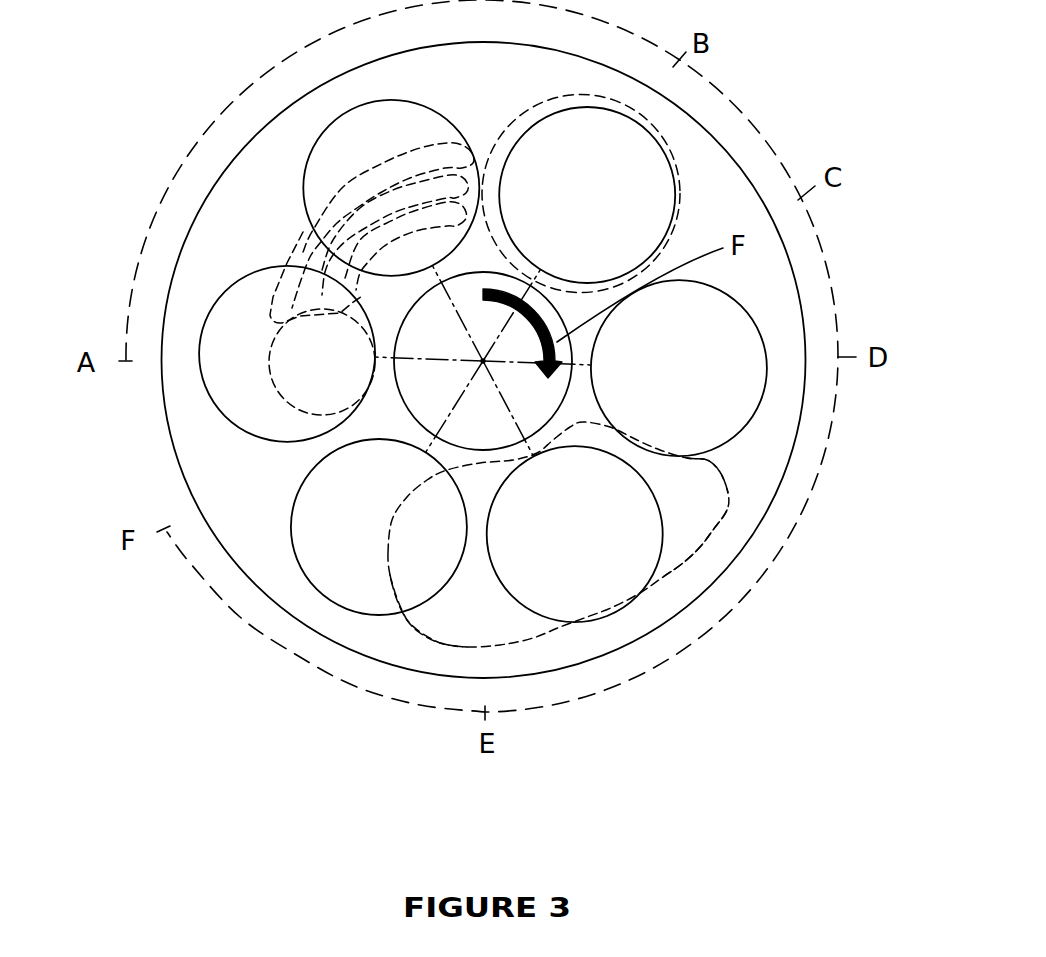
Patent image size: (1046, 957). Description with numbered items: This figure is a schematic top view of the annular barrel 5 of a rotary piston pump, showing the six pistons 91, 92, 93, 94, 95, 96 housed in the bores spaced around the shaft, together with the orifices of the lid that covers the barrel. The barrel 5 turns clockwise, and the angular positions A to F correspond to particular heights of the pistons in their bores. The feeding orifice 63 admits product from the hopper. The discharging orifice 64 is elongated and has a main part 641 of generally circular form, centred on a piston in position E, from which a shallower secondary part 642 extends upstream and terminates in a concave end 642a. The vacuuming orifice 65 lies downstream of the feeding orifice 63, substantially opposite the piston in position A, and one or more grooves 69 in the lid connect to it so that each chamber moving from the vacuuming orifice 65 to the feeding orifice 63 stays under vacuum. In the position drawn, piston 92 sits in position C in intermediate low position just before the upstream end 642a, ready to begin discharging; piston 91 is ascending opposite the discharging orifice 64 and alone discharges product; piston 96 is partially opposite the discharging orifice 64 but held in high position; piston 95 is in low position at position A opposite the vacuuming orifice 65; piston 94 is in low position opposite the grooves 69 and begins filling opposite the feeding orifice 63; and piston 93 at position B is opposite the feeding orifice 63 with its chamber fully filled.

The annular barrel 5 is at (710, 175).
The feeding orifice 63 is at (590, 107).
The discharging orifice 64 is at (572, 628).
The main part of the discharging orifice 641 is at (417, 623).
The secondary part of the discharging orifice 642 is at (700, 550).
The concave end of the secondary part 642a is at (687, 460).
The vacuuming orifice 65 is at (280, 377).
The grooves 69 is at (305, 250).
The piston 91 is at (560, 526).
The piston 92 is at (666, 372).
The piston 93 is at (571, 196).
The piston 94 is at (361, 146).
The piston 95 is at (220, 371).
The piston 96 is at (351, 525).